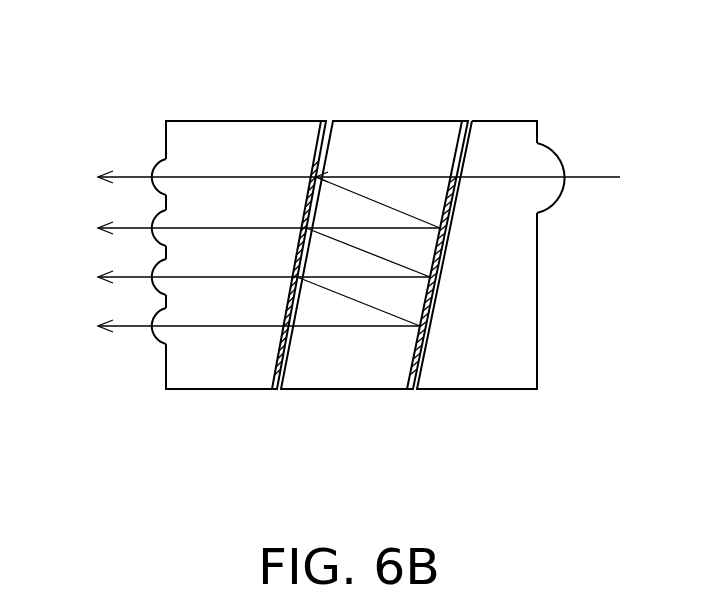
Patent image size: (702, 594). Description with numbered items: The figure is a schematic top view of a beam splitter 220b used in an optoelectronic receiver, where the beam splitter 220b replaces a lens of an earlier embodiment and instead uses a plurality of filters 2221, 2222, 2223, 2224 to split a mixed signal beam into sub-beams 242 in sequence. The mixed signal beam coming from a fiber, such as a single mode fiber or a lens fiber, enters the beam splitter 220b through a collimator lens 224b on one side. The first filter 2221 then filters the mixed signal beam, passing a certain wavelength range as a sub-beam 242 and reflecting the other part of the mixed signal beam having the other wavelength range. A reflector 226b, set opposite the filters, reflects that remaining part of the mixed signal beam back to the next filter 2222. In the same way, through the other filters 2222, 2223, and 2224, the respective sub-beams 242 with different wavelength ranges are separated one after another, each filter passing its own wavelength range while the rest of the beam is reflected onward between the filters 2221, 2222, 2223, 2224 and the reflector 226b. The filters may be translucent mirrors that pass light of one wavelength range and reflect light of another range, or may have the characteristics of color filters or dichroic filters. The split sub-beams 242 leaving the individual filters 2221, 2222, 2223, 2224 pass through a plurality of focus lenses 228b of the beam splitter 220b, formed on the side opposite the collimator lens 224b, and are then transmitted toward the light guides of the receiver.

The beam splitter 220b is at (553, 468).
The collimator lens 224b is at (548, 162).
The reflector 226b is at (447, 247).
The focus lenses 228b is at (160, 320).
The sub-beams 242 is at (131, 187).
The filter 2221 is at (314, 166).
The filter 2222 is at (305, 217).
The filter 2223 is at (303, 285).
The filter 2224 is at (284, 336).